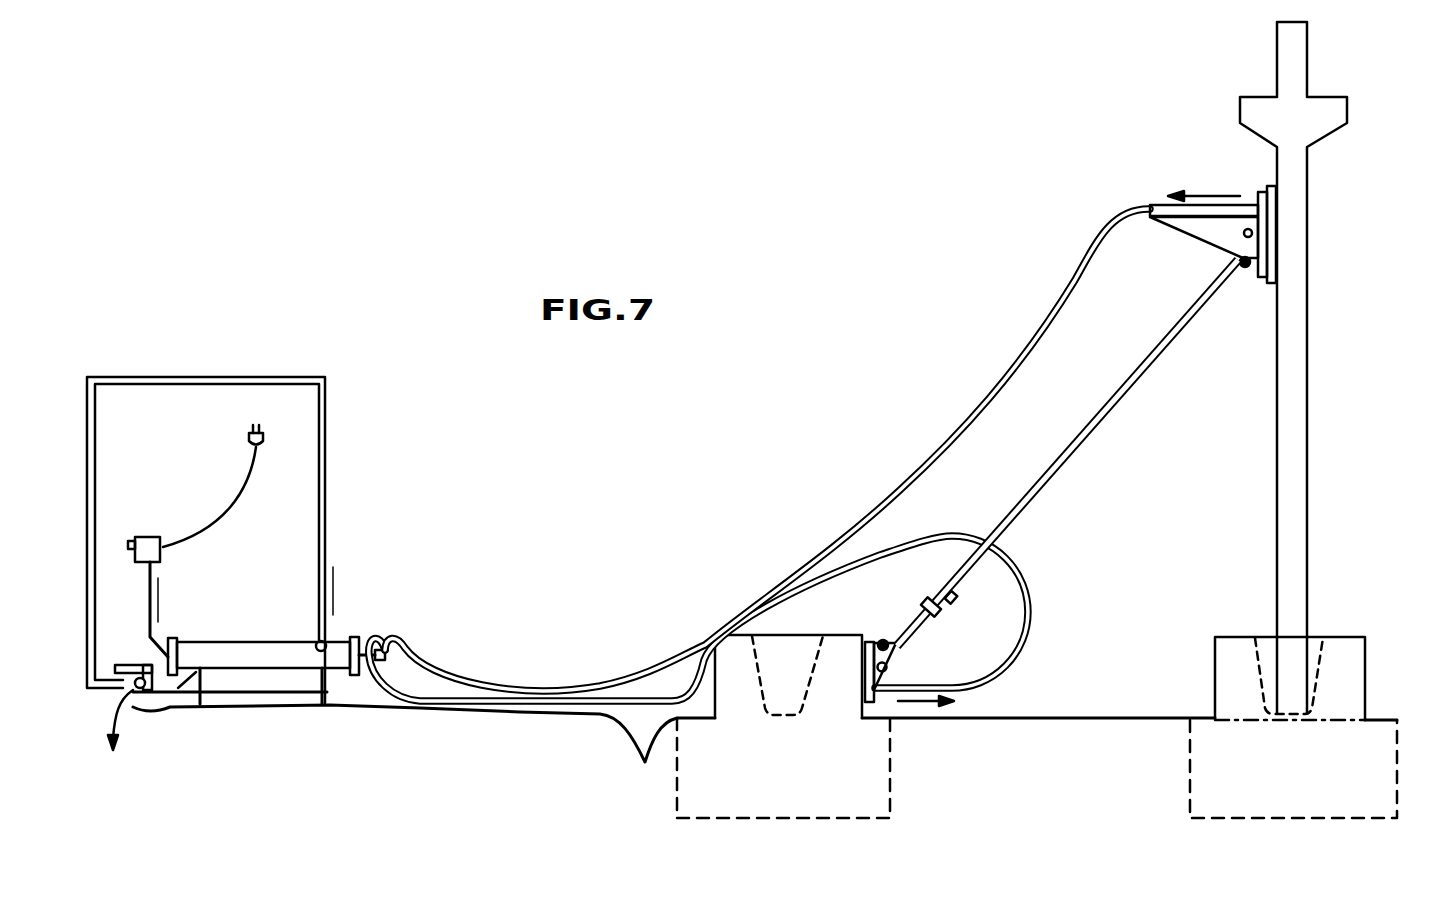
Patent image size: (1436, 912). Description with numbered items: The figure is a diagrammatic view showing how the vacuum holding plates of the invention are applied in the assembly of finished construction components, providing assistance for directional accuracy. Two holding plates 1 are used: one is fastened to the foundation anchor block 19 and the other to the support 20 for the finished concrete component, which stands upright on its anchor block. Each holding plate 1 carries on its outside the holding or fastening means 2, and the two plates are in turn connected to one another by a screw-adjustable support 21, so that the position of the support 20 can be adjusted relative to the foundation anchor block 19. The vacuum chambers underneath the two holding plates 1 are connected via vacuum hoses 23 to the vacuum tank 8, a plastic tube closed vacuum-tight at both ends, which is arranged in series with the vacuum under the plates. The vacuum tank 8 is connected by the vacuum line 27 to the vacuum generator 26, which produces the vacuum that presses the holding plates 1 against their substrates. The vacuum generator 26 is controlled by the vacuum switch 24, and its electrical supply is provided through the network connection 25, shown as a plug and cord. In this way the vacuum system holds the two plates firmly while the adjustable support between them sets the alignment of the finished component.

The holding plate 1 is at (1263, 216).
The holding or fastening means 2 is at (1263, 248).
The vacuum tank 8 is at (272, 660).
The foundation anchor block 19 is at (688, 798).
The support for the finished concrete component 20 is at (1295, 158).
The screw-adjustable support 21 is at (1048, 461).
The vacuum hoses 23 is at (893, 556).
The vacuum switch 24 is at (146, 537).
The network connection 25 is at (257, 456).
The vacuum generator 26 is at (152, 693).
The vacuum line 27 is at (323, 487).